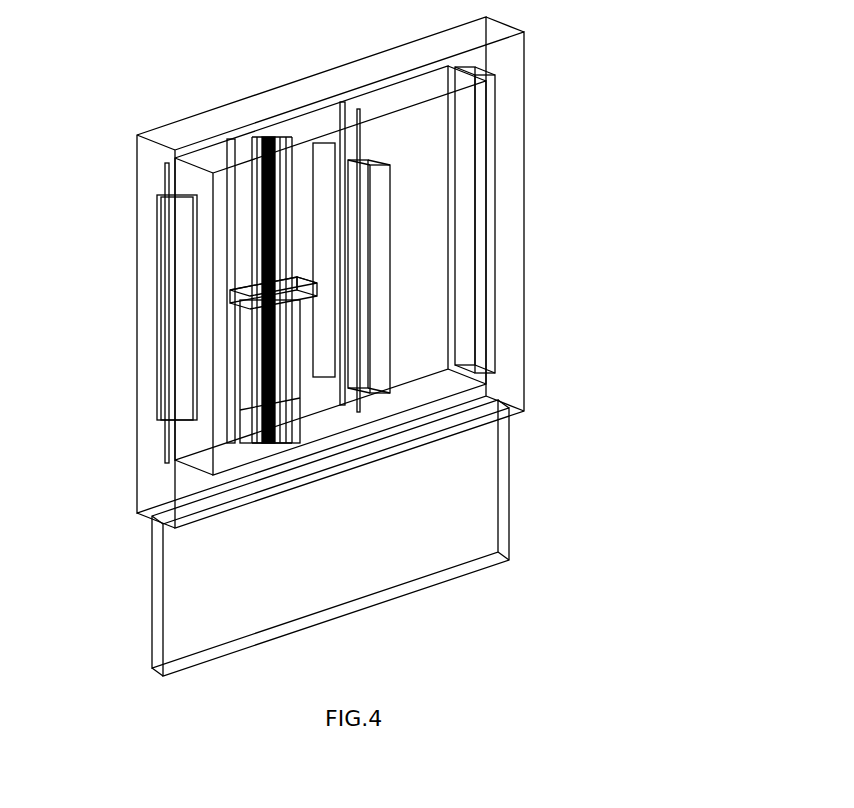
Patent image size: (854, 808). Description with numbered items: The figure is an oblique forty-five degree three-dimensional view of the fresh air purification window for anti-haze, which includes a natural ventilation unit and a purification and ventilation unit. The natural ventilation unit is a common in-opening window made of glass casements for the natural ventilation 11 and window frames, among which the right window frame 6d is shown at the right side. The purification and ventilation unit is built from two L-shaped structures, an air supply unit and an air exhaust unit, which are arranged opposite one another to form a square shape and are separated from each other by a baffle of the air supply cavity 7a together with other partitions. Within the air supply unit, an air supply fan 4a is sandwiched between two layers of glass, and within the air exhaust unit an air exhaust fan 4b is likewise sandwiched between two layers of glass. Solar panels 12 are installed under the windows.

The right window frame 6d is at (508, 226).
The glass casements for the natural ventilation 11 is at (432, 143).
The baffle of the air supply cavity 7a is at (243, 185).
The air exhaust fan 4b is at (257, 232).
The air supply fan 4a is at (262, 393).
The solar panels 12 is at (485, 477).